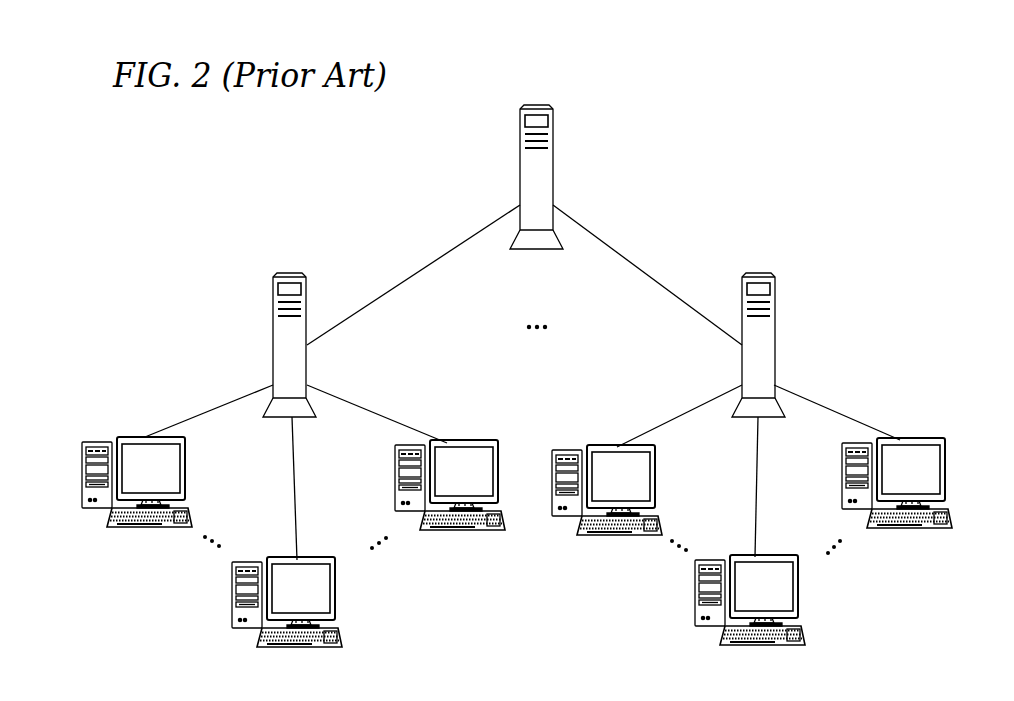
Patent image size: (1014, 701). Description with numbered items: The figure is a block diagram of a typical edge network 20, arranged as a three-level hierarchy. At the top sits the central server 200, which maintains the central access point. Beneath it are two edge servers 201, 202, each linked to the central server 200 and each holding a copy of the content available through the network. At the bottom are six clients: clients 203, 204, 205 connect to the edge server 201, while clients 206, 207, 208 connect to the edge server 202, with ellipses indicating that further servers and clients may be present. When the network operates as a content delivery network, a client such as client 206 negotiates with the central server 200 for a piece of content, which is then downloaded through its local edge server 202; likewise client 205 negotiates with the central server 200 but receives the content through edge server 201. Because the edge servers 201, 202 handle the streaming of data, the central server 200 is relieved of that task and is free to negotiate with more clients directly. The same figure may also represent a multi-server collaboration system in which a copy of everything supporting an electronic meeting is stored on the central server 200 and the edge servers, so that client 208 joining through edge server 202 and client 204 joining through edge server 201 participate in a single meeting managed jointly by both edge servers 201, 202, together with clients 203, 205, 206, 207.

The edge network 20 is at (663, 178).
The central server 200 is at (520, 172).
The edge server 201 is at (273, 295).
The edge server 202 is at (775, 292).
The client 203 is at (186, 467).
The client 204 is at (338, 588).
The client 205 is at (396, 468).
The client 206 is at (657, 473).
The client 207 is at (800, 583).
The client 208 is at (842, 467).